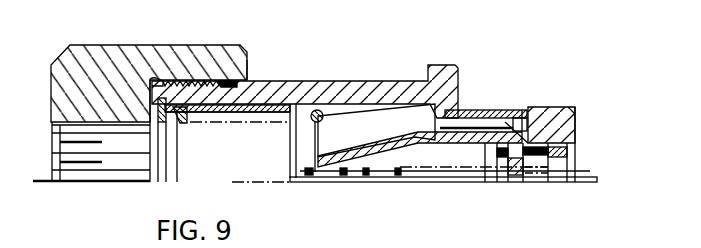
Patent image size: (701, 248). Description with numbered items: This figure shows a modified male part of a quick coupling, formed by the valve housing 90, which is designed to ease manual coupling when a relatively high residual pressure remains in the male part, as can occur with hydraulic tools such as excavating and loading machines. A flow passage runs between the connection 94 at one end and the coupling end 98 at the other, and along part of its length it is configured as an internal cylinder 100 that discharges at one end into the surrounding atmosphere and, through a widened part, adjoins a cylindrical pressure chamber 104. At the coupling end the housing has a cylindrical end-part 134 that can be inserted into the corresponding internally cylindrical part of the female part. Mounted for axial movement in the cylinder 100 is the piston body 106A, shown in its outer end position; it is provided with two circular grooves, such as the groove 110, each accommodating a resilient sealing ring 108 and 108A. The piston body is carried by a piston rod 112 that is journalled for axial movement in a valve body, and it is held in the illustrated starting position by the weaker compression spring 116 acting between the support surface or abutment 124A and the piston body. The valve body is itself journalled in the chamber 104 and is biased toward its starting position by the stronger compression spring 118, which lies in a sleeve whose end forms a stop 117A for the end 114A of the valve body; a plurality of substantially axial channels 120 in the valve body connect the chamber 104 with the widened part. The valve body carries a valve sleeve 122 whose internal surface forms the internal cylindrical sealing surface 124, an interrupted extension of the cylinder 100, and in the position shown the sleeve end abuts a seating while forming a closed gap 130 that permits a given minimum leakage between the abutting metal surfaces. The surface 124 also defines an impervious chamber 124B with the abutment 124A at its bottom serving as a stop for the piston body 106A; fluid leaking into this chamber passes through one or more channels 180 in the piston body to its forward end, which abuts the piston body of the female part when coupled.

The valve housing 90 is at (209, 47).
The connection 94 is at (117, 180).
The coupling end 98 is at (578, 123).
The cylinder 100 is at (532, 112).
The pressure chamber 104 is at (216, 179).
The piston body 106A is at (582, 167).
The sealing ring 108 is at (517, 170).
The sealing ring 108A is at (575, 149).
The circular groove 110 is at (573, 180).
The piston rod 112 is at (310, 183).
The end of valve body 114A is at (320, 108).
The compression spring 116 is at (372, 178).
The stop 117A is at (249, 82).
The compression spring 118 is at (181, 127).
The axial channels 120 is at (388, 104).
The valve sleeve 122 is at (482, 165).
The internal cylindrical sealing surface 124 is at (468, 112).
The abutment 124A is at (400, 146).
The impervious chamber 124B is at (431, 162).
The closed gap 130 is at (502, 117).
The cylindrical end-part 134 is at (574, 112).
The channels 180 is at (566, 162).